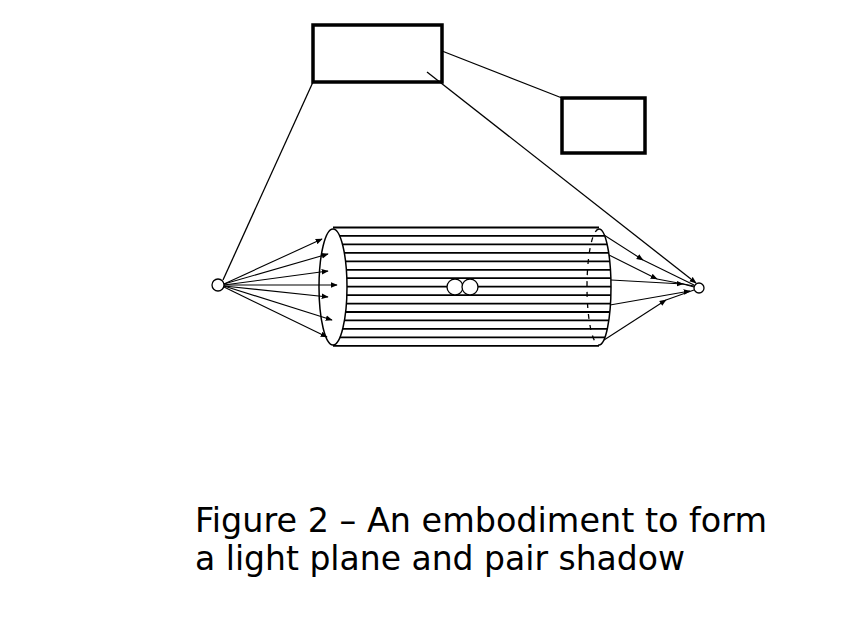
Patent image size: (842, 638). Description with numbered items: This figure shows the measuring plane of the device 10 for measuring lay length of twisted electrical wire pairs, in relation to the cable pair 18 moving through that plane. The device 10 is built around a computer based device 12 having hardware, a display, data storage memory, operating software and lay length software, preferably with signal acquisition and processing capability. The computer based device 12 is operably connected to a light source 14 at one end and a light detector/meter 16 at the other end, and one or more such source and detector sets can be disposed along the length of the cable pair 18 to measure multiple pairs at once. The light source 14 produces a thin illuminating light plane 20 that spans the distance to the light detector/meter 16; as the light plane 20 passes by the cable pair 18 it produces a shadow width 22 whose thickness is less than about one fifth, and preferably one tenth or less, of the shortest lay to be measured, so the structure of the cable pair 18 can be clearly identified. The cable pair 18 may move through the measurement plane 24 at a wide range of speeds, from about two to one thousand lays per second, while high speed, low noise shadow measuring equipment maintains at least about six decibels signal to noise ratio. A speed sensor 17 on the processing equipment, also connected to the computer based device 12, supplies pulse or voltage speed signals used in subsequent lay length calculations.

The device for measuring lay length 10 is at (690, 162).
The computer based device 12 is at (459, 154).
The light source 14 is at (210, 277).
The light detector/meter 16 is at (703, 275).
The speed sensor 17 is at (543, 102).
The cable pair 18 is at (450, 273).
The light plane 20 is at (337, 275).
The shadow width 22 is at (613, 290).
The measurement plane 24 is at (598, 278).